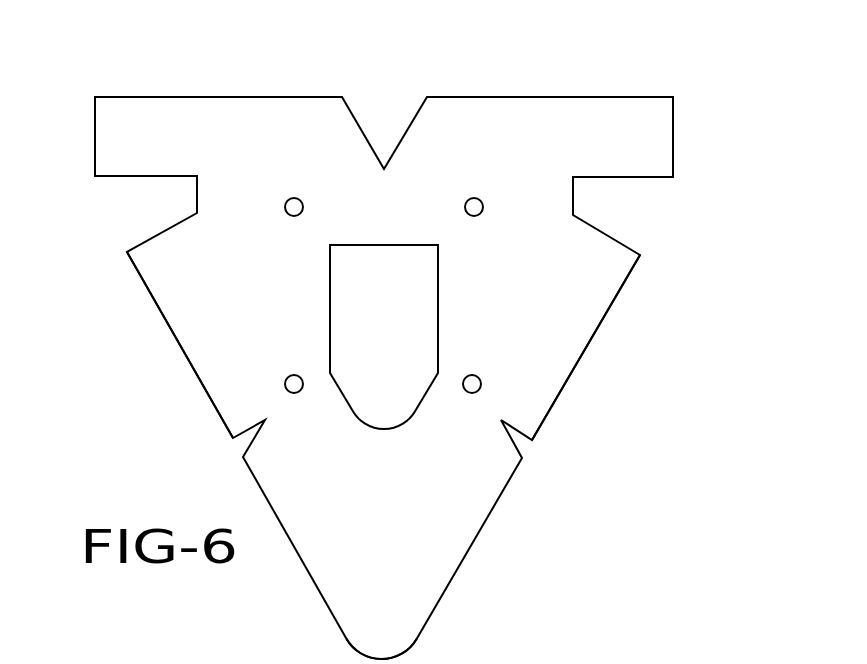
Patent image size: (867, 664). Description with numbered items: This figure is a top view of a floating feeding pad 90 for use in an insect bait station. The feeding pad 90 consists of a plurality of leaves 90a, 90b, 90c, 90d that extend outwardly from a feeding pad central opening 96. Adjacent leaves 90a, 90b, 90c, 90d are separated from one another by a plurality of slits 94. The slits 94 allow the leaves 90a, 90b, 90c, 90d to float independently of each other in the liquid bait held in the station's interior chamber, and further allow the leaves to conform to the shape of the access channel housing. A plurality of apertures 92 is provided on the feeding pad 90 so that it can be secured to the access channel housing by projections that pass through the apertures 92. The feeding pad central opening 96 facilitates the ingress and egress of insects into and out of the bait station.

The floating feeding pad 90 is at (90, 95).
The leaf 90a is at (543, 97).
The leaf 90b is at (198, 378).
The leaf 90c is at (432, 613).
The leaf 90d is at (603, 318).
The apertures 92 is at (481, 384).
The slits 94 is at (587, 203).
The feeding pad central opening 96 is at (399, 339).